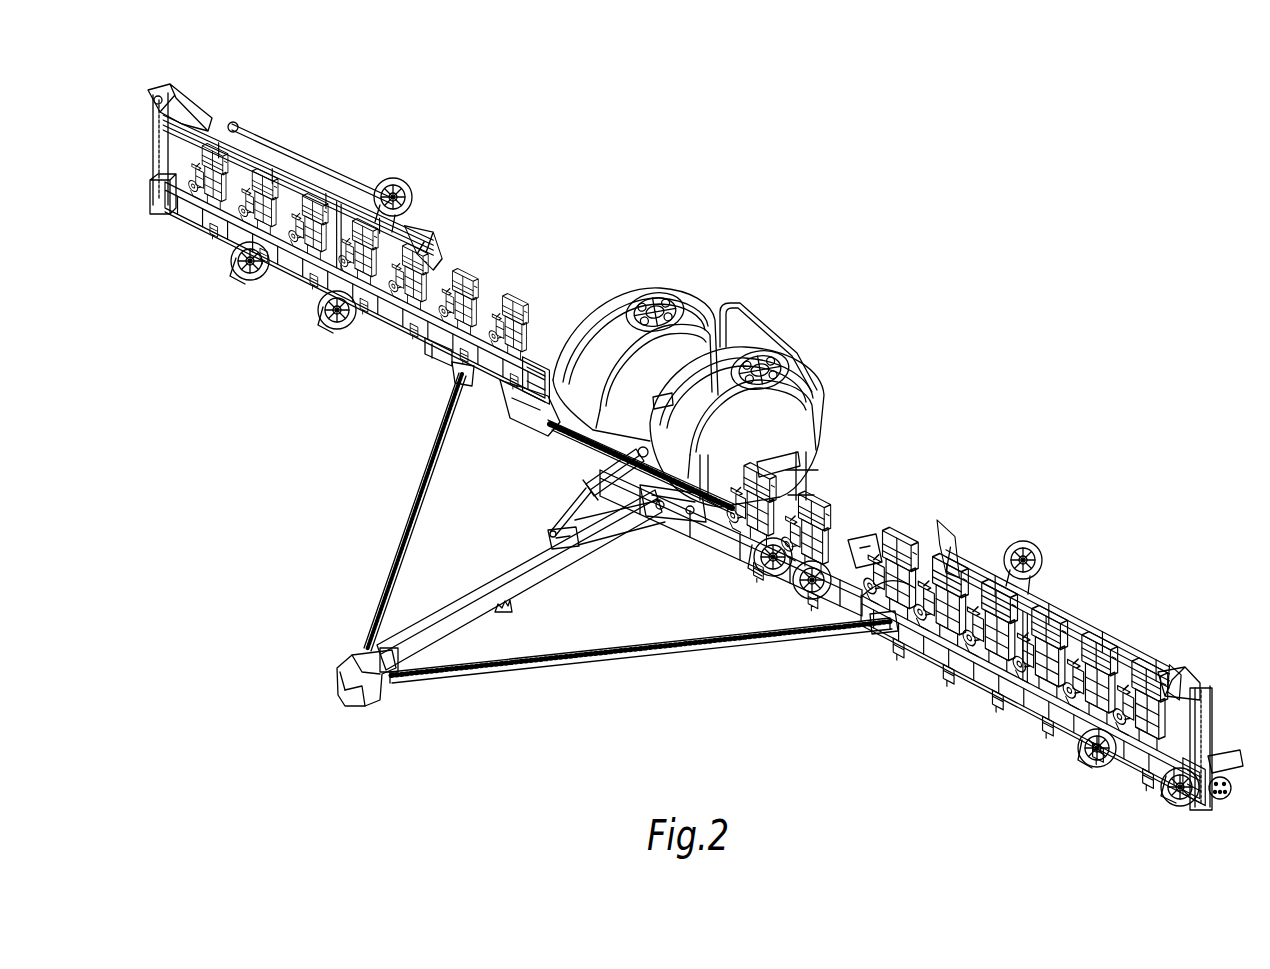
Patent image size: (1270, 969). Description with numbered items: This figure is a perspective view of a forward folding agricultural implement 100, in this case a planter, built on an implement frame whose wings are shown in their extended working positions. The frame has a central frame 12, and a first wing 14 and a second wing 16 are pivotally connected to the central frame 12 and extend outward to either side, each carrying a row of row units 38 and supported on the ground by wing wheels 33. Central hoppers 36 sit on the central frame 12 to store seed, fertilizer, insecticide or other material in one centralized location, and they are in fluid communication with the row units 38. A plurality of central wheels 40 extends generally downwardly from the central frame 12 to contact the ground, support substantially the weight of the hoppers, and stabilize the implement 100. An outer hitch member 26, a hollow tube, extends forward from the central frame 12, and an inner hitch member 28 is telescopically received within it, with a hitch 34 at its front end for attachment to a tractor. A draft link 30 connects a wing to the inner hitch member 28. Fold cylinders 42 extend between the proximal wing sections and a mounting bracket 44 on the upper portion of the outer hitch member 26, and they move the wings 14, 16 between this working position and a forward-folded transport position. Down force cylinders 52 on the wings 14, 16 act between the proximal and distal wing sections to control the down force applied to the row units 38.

The agricultural implement 100 is at (695, 459).
The central frame 12 is at (681, 500).
The first wing 14 is at (1052, 666).
The second wing 16 is at (673, 459).
The outer hitch member 26 is at (519, 580).
The inner hitch member 28 is at (672, 430).
The draft link 30 is at (644, 645).
The wing wheels 33 is at (689, 538).
The hitch 34 is at (339, 677).
The central hoppers 36 is at (688, 385).
The row units 38 is at (499, 315).
The central wheels 40 is at (789, 576).
The fold cylinders 42 is at (595, 491).
The mounting bracket 44 is at (544, 528).
The down force cylinders 52 is at (649, 467).